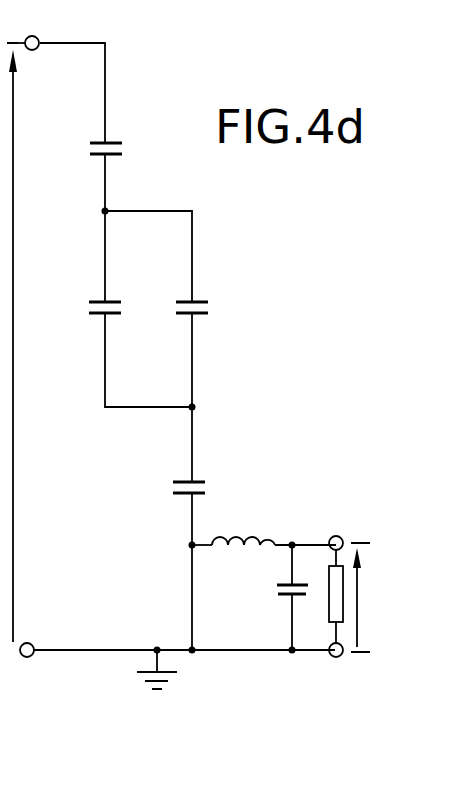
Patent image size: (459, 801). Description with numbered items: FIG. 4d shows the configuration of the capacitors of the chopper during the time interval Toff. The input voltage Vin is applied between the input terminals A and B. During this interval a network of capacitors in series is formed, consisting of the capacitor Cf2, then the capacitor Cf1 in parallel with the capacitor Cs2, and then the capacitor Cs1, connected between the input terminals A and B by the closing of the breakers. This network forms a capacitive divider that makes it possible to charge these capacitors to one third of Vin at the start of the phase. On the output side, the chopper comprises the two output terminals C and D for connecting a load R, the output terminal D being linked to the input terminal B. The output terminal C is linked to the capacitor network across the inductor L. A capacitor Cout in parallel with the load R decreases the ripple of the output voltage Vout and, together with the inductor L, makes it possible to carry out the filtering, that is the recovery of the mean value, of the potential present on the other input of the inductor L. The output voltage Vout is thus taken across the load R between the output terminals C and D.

The input terminal A is at (34, 36).
The input terminal B is at (29, 657).
The output terminal C is at (337, 536).
The output terminal D is at (331, 657).
The capacitor Cf1 is at (88, 310).
The capacitor Cf2 is at (89, 141).
The capacitor Cs1 is at (206, 486).
The capacitor Cs2 is at (209, 310).
The capacitor Cout is at (275, 590).
The inductor L is at (240, 534).
The load R is at (328, 598).
The input voltage Vin is at (28, 342).
The output voltage Vout is at (378, 597).